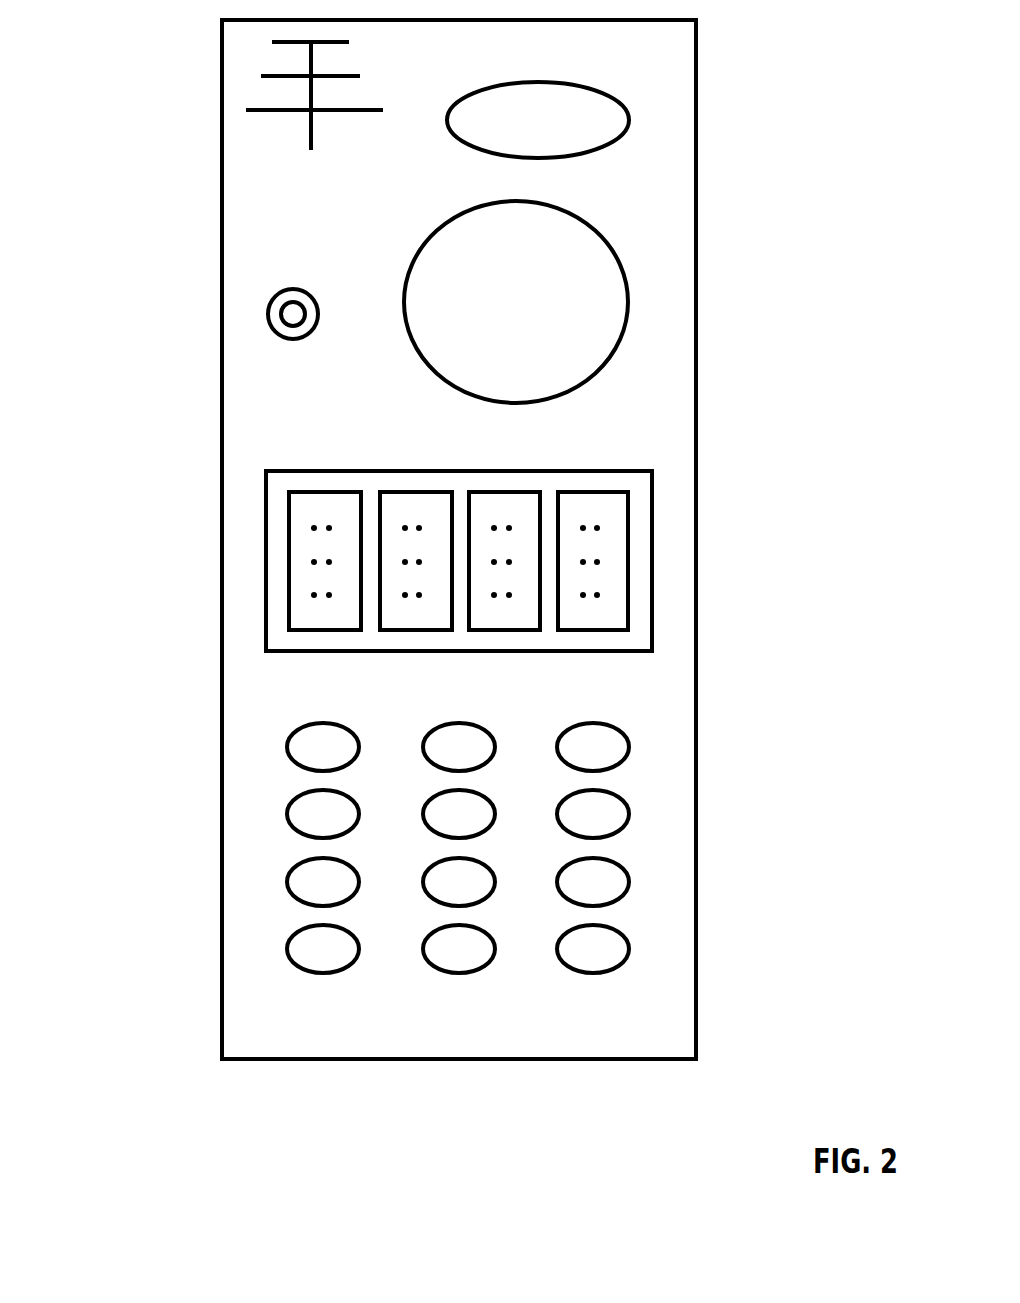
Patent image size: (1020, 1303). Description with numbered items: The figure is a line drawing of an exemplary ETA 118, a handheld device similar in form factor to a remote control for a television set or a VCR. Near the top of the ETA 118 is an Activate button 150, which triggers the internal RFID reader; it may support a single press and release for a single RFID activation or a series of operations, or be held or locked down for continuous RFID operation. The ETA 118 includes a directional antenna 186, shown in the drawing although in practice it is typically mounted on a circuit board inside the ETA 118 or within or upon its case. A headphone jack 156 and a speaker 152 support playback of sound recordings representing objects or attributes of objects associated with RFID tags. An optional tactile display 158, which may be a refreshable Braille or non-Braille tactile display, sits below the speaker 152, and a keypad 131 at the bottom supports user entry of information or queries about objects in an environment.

The ETA 118 is at (104, 1066).
The directional antenna 186 is at (246, 110).
The Activate button 150 is at (629, 120).
The speaker 152 is at (628, 305).
The headphone jack 156 is at (270, 297).
The tactile display 158 is at (628, 561).
The keypad 131 is at (175, 723).